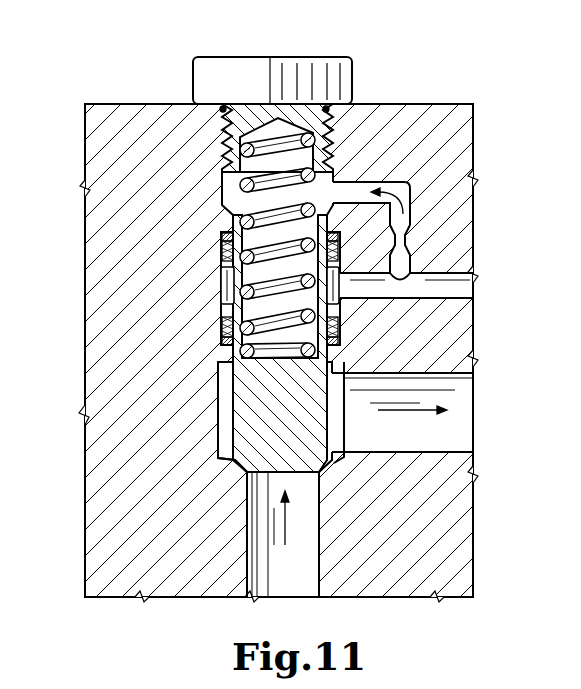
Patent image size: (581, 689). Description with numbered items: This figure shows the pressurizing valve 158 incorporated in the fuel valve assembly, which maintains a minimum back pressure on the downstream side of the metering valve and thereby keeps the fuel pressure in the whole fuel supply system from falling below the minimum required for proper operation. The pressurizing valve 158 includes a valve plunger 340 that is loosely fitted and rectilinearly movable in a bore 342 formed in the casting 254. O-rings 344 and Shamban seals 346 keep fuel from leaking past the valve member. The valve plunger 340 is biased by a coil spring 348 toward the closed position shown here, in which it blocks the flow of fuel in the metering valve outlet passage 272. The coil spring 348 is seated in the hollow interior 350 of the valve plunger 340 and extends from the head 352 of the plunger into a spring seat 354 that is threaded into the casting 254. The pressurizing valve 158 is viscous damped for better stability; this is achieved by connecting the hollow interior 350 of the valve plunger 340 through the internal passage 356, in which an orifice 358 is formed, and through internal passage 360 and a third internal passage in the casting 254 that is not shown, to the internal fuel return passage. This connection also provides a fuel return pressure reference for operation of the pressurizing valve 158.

The pressurizing valve 158 is at (230, 481).
The casting 254 is at (478, 536).
The metering valve outlet passage 272 is at (318, 598).
The valve plunger 340 is at (340, 422).
The bore 342 is at (224, 272).
The O-rings 344 is at (225, 246).
The Shamban seals 346 is at (222, 236).
The coil spring 348 is at (224, 290).
The hollow interior 350 is at (322, 313).
The head 352 is at (292, 426).
The spring seat 354 is at (337, 126).
The internal passage 356 is at (410, 197).
The orifice 358 is at (405, 233).
The internal passage 360 is at (335, 285).